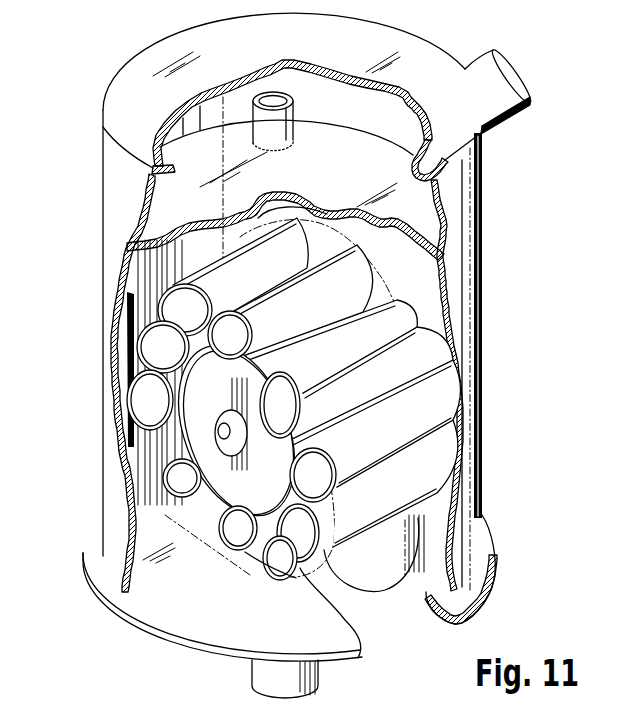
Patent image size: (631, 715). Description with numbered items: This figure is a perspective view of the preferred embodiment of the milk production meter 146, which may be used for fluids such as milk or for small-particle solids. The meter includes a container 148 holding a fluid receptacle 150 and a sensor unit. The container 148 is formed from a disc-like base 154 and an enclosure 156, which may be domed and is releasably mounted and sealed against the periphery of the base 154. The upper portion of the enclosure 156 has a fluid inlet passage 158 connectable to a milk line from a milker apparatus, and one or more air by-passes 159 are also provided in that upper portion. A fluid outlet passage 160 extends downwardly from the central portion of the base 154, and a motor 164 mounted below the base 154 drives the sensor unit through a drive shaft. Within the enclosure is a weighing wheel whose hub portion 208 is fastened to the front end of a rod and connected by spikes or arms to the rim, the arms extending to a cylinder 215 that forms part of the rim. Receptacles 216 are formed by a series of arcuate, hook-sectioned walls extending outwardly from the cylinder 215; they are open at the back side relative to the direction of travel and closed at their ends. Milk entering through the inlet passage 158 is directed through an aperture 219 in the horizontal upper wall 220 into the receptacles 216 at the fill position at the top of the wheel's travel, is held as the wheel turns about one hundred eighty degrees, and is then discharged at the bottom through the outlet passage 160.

The milk production meter 146 is at (103, 79).
The enclosure 156 is at (107, 152).
The fluid inlet passage 158 is at (513, 80).
The air by-pass 159 is at (287, 92).
The horizontal upper wall 220 is at (332, 160).
The aperture 219 is at (258, 196).
The fluid receptacle 150 is at (294, 399).
The container 148 is at (482, 285).
The hub portion 208 is at (230, 414).
The cylinder 215 is at (213, 508).
The receptacles 216 is at (250, 573).
The motor 164 is at (392, 569).
The disc-like base 154 is at (494, 572).
The fluid outlet passage 160 is at (258, 677).